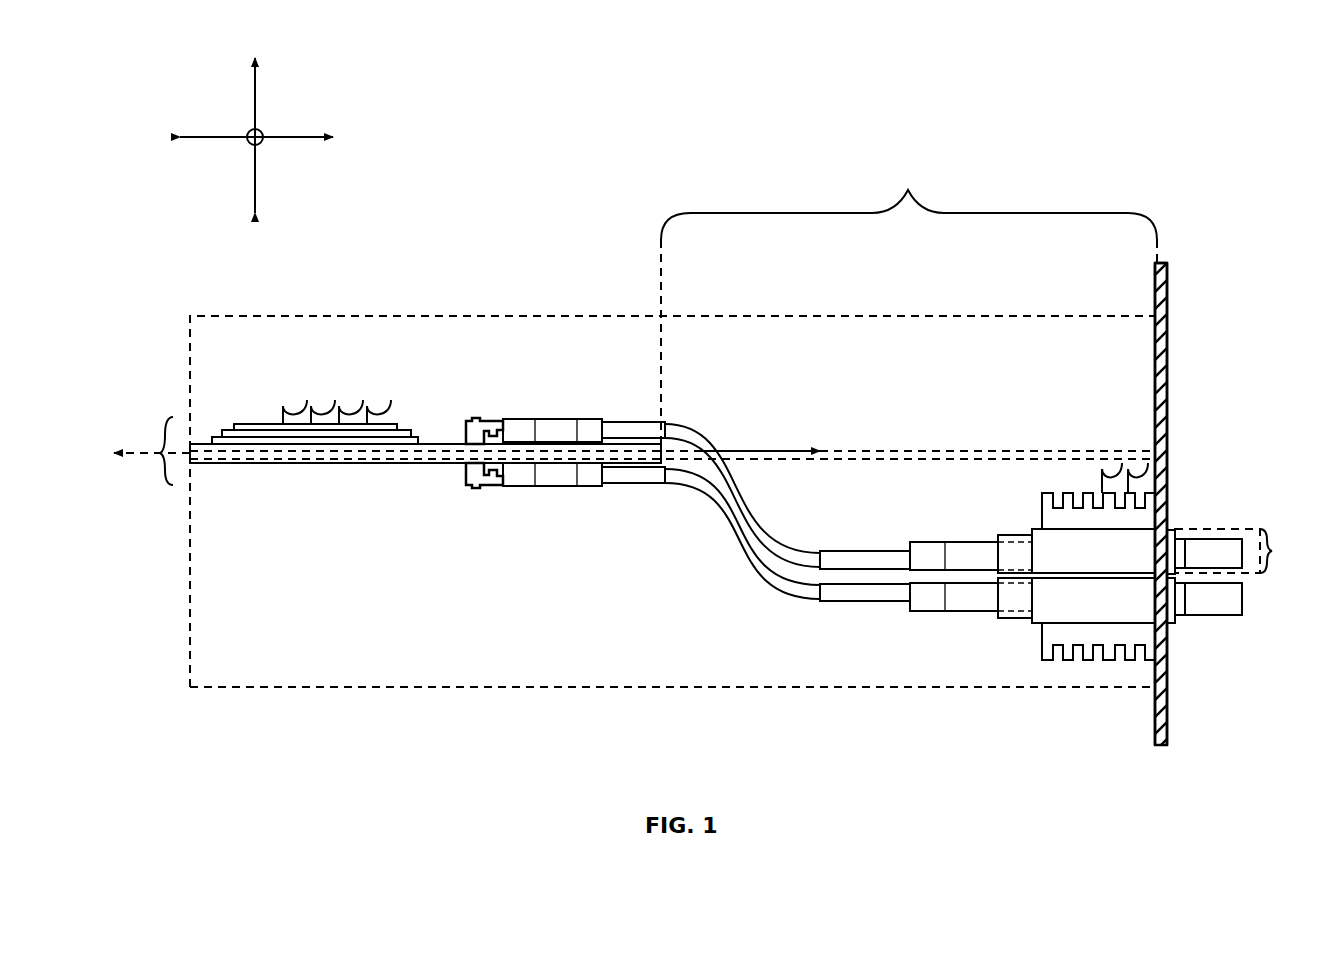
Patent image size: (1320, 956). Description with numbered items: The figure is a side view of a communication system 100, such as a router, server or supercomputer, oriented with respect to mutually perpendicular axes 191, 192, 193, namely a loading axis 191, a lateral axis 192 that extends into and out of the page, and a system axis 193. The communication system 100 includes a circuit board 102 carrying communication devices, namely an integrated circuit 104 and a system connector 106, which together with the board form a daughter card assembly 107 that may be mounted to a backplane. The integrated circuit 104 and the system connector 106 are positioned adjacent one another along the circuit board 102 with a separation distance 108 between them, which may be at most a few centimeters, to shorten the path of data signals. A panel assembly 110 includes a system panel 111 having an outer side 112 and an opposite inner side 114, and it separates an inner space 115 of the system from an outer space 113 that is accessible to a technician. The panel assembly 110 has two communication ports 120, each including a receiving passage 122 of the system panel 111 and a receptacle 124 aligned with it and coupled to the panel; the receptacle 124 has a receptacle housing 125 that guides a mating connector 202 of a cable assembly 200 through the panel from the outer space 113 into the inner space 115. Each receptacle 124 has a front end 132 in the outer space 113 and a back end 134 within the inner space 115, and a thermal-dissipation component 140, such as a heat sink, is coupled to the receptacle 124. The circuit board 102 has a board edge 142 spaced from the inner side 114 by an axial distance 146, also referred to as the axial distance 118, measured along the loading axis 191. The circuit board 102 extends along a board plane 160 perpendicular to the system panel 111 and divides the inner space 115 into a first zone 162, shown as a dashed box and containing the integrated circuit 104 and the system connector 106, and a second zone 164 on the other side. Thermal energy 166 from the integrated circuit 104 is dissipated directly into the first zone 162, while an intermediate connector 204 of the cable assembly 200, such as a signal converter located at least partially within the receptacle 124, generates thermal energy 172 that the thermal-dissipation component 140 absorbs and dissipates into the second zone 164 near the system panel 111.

The communication system 100 is at (1120, 168).
The circuit board 102 is at (201, 442).
The integrated circuit 104 is at (275, 416).
The system connector 106 is at (503, 408).
The daughter card assembly 107 is at (173, 447).
The separation distance 108 is at (464, 411).
The panel assembly 110 is at (1200, 265).
The system panel 111 is at (1162, 258).
The outer side 112 is at (1172, 332).
The outer space 113 is at (1224, 375).
The inner side 114 is at (1150, 384).
The inner space 115 is at (949, 372).
The axial distance 118 is at (848, 340).
The communication port 120 is at (1182, 517).
The receiving passage 122 is at (1243, 551).
The receptacle 124 is at (1048, 529).
The receptacle housing 125 is at (1045, 615).
The front end 132 is at (1180, 532).
The back end 134 is at (1030, 535).
The thermal-dissipation component 140 is at (1088, 492).
The board edge 142 is at (665, 448).
The axial distance 146 is at (909, 302).
The board plane 160 is at (165, 458).
The first zone 162 is at (480, 316).
The second zone 164 is at (517, 688).
The thermal energy 166 is at (373, 394).
The thermal energy 172 is at (1118, 470).
The loading axis 191 is at (290, 137).
The lateral axis 192 is at (247, 132).
The system axis 193 is at (250, 172).
The cable assembly 200 is at (845, 530).
The mating connector 202 is at (580, 410).
The intermediate connector 204 is at (925, 542).